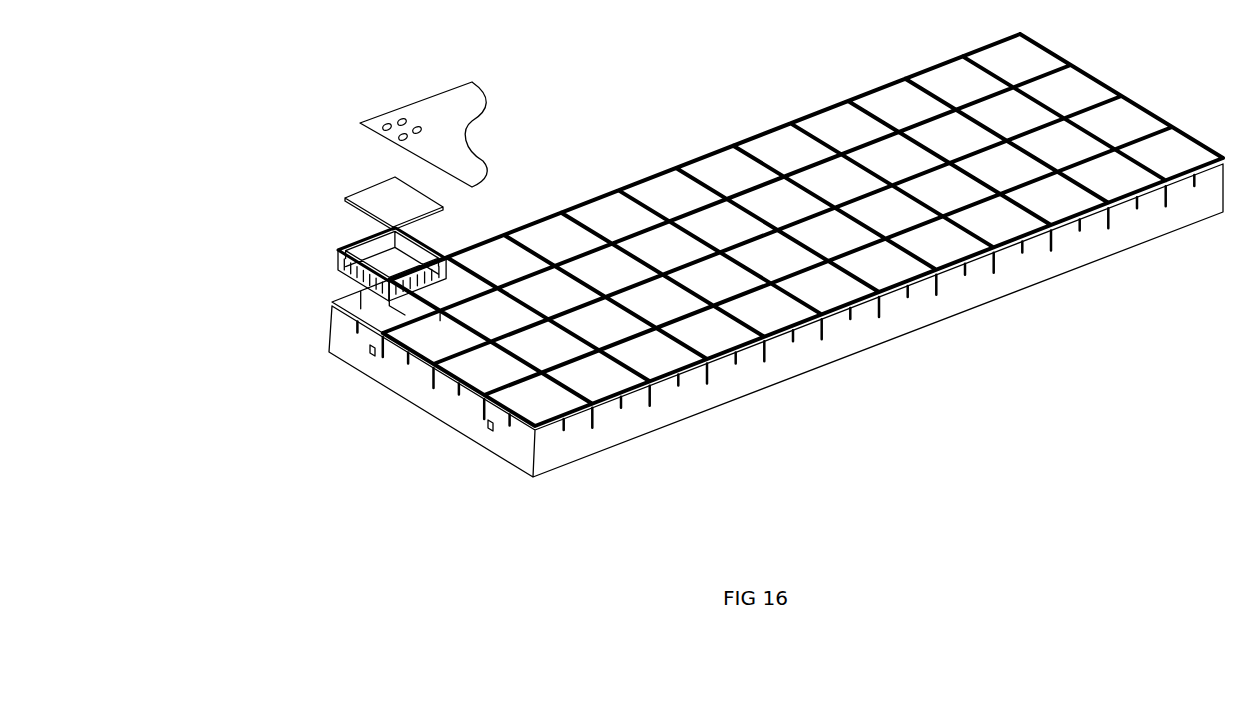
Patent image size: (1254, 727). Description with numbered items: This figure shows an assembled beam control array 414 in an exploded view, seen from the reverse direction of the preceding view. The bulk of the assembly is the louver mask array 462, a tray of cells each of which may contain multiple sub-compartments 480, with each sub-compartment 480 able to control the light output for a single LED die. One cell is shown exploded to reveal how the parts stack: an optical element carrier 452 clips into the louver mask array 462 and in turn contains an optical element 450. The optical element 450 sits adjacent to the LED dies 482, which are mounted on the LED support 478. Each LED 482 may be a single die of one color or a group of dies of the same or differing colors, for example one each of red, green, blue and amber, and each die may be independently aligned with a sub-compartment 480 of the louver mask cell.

The beam control array 414 is at (830, 363).
The louver mask array 462 is at (343, 345).
The sub-compartment 480 is at (332, 304).
The optical element carrier 452 is at (338, 252).
The optical element 450 is at (362, 197).
The LED support 478 is at (380, 132).
The LED dies 482 is at (397, 120).